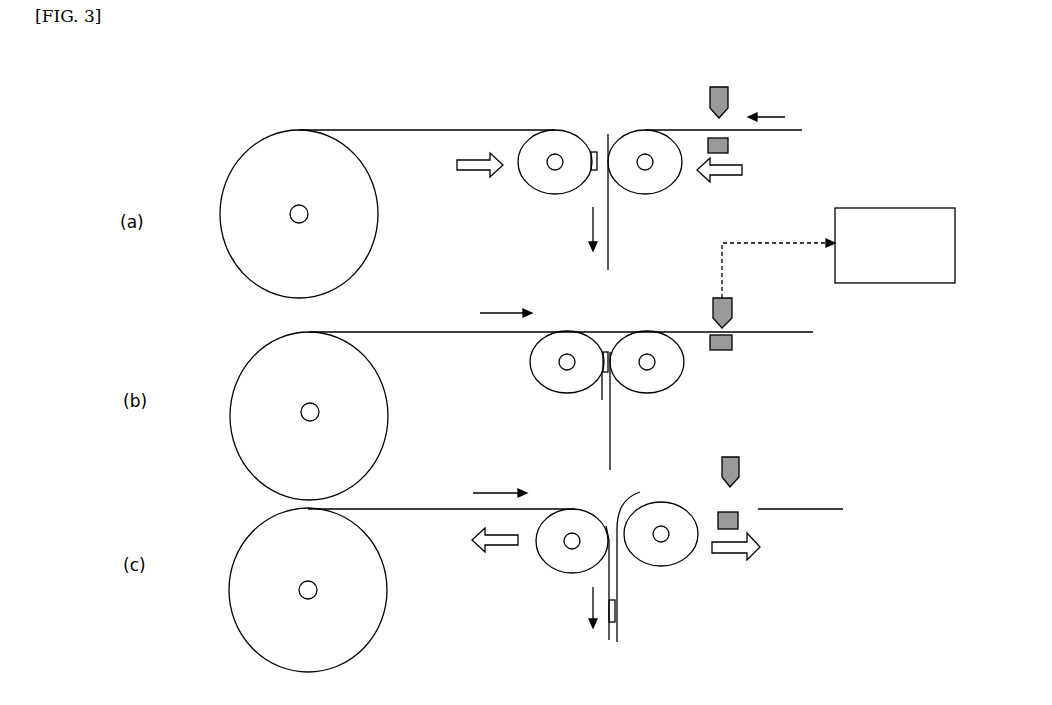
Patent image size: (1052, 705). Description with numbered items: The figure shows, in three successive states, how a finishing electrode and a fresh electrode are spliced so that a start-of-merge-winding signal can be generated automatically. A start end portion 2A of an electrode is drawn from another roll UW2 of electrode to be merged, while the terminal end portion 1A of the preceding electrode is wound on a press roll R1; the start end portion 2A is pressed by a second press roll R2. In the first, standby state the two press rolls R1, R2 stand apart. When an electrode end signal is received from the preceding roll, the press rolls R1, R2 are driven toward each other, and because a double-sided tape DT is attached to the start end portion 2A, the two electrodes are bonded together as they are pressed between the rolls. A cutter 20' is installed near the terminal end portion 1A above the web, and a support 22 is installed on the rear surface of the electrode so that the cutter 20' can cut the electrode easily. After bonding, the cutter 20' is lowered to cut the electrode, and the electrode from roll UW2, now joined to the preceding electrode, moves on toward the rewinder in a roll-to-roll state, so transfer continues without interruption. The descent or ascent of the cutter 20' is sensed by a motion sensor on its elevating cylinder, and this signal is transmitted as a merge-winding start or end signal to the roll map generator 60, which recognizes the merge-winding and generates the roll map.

The roll of electrode to be merged UW2 is at (243, 186).
The start end portion 2A is at (406, 133).
The press roll R2 is at (551, 183).
The press roll R1 is at (649, 185).
The double-sided tape DT is at (597, 150).
The terminal end portion 1A is at (683, 129).
The cutter 20' is at (761, 207).
The support 22 is at (729, 146).
The roll map generator 60 is at (892, 207).